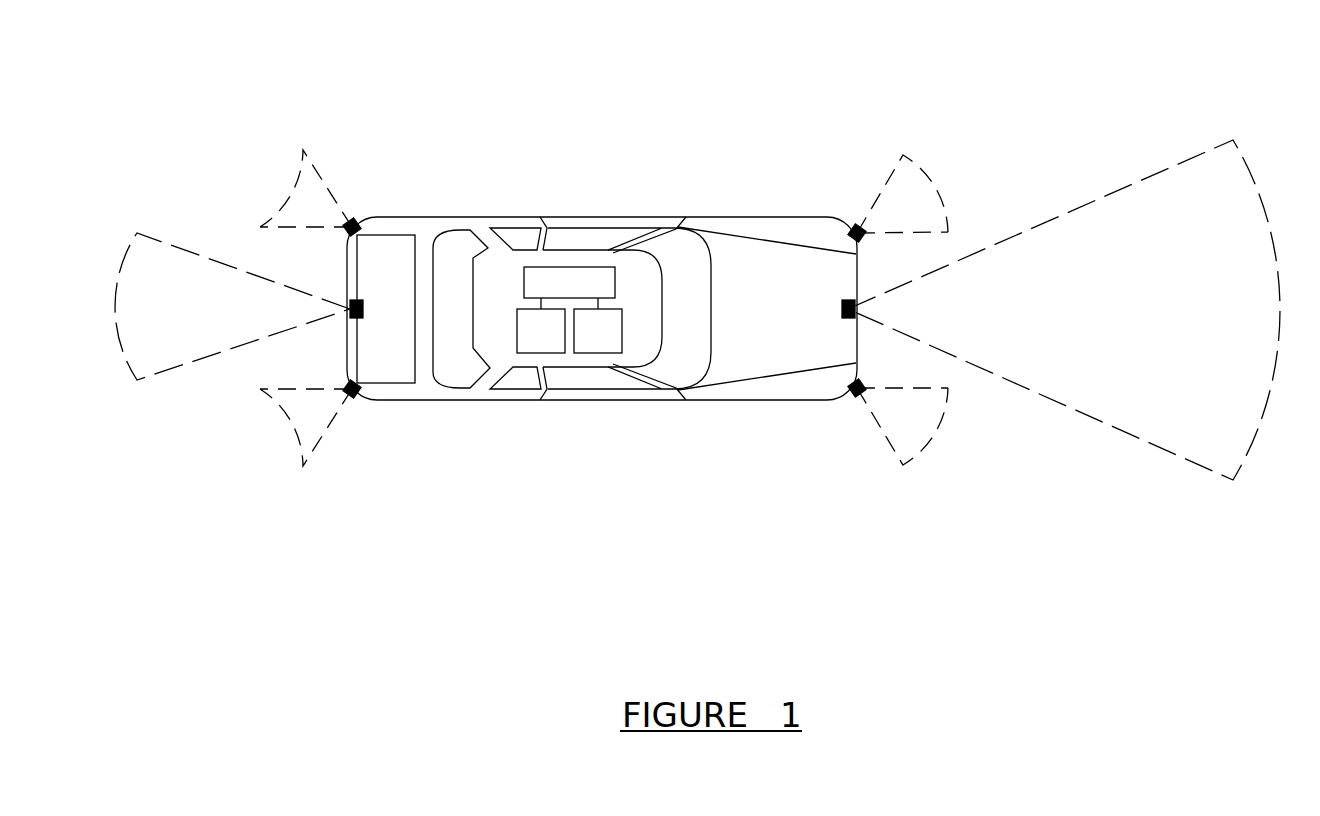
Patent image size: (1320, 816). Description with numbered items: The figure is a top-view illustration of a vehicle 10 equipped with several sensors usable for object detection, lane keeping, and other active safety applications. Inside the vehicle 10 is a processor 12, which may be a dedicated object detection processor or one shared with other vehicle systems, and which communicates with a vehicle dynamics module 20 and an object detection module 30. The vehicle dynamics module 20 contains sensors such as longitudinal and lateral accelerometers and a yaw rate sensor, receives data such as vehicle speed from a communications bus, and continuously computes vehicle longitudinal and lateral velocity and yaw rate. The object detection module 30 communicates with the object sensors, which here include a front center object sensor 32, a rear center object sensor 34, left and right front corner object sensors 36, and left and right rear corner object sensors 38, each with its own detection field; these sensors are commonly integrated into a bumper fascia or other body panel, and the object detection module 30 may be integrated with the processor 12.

The vehicle 10 is at (597, 217).
The processor 12 is at (569, 288).
The vehicle dynamics module 20 is at (598, 331).
The object detection module 30 is at (541, 331).
The front center object sensor 32 is at (855, 318).
The rear center object sensor 34 is at (356, 300).
The front corner object sensors 36 is at (853, 222).
The rear corner object sensors 38 is at (357, 220).